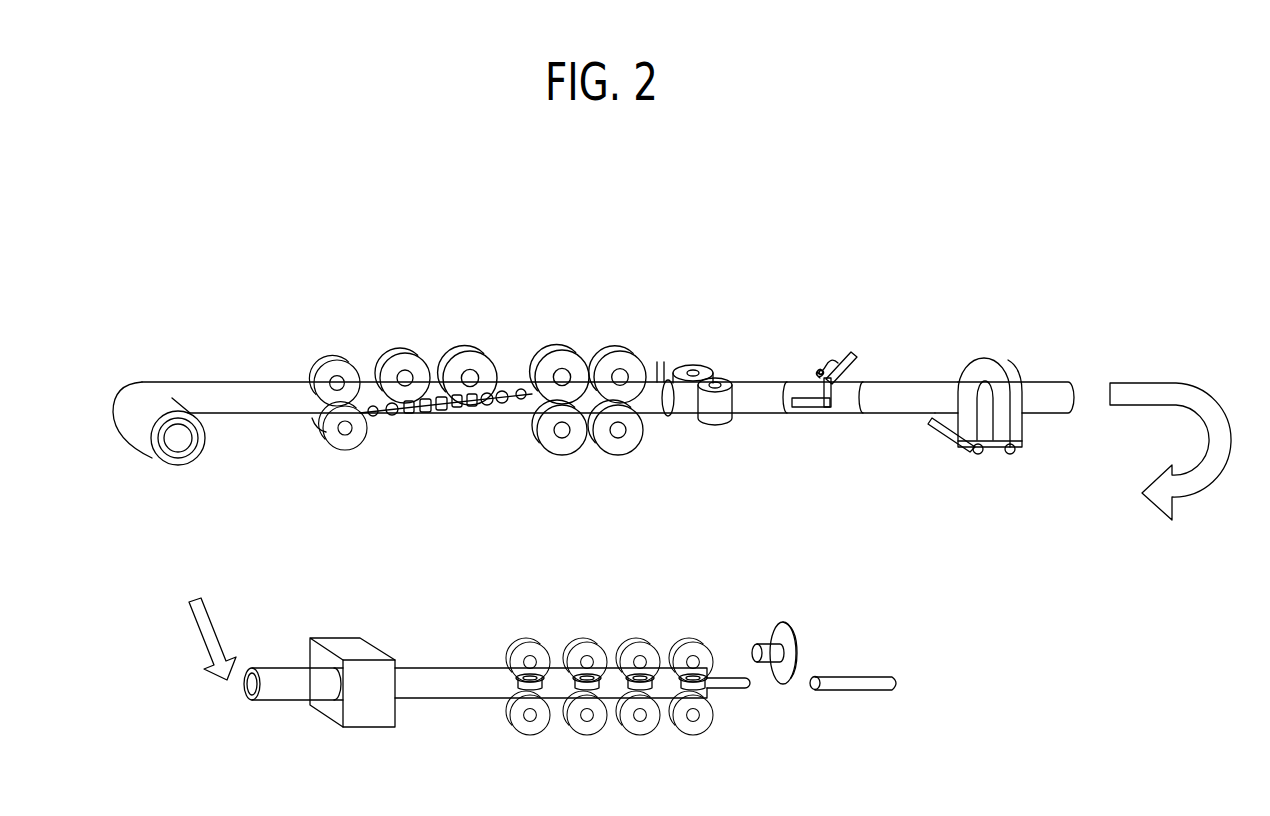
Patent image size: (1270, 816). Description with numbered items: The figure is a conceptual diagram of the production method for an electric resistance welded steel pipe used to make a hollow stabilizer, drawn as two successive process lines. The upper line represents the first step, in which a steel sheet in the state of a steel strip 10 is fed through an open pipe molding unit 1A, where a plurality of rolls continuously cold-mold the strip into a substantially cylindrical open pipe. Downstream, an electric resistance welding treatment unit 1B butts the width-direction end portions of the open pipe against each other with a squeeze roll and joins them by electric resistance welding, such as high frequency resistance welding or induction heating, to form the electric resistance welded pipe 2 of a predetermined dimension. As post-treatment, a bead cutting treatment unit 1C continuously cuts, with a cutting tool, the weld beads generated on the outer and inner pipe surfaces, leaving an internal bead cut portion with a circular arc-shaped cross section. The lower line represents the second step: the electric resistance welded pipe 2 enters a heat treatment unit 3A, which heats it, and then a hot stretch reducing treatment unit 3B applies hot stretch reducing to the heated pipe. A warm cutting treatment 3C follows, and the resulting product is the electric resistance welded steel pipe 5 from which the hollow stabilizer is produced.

The instrument body tube 10 is at (230, 391).
The open pipe molding unit 1A is at (477, 344).
The electric resistance welding treatment unit 1B is at (704, 339).
The bead cutting treatment unit 1C is at (856, 330).
The electric resistance welded pipe 2 is at (1040, 390).
The heat treatment unit 3A is at (530, 628).
The hot stretch reducing treatment unit 3B is at (609, 625).
The warm cutting treatment 3C is at (796, 600).
The electric resistance welded steel pipe 5 is at (855, 680).